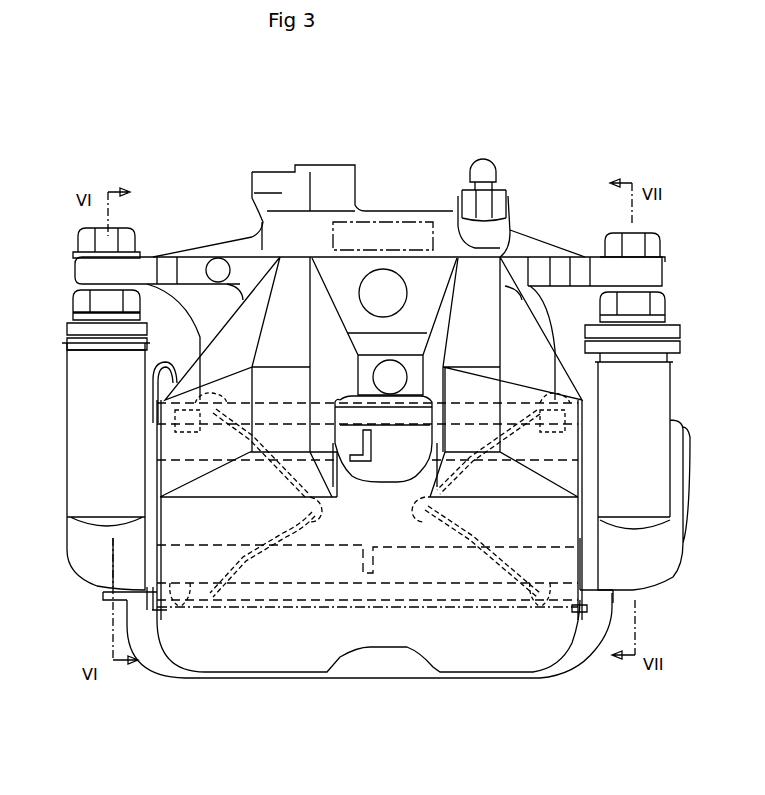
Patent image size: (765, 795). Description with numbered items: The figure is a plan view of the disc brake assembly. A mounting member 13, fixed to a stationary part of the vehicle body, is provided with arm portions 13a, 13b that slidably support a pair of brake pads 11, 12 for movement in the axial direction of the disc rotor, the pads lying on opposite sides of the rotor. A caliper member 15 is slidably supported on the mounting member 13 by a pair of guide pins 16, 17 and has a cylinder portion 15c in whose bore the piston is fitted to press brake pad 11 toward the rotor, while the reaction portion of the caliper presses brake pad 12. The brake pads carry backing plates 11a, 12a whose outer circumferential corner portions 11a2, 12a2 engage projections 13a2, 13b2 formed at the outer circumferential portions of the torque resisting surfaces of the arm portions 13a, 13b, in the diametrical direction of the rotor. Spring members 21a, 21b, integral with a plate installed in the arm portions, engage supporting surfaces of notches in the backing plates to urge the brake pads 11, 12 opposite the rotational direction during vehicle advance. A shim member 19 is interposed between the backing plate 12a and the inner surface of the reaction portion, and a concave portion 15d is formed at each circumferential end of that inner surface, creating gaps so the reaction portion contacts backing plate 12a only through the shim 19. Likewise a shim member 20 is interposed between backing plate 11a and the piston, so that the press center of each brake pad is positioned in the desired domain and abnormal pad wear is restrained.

The brake pad 11 is at (394, 455).
The backing plate 11a is at (453, 404).
The outer circumferential corner portion 11a2 is at (153, 423).
The brake pad 12 is at (327, 560).
The backing plate 12a is at (447, 600).
The outer circumferential corner portion 12a2 is at (143, 583).
The mounting member 13 is at (397, 673).
The arm portion 13a is at (655, 383).
The projection 13a2 is at (157, 415).
The arm portion 13b is at (130, 610).
The projection 13b2 is at (103, 595).
The caliper member 15 is at (396, 209).
The cylinder portion 15c is at (262, 230).
The concave portion 15d is at (180, 610).
The guide pin 16 is at (657, 303).
The guide pin 17 is at (68, 299).
The shim member 19 is at (272, 600).
The shim member 20 is at (267, 400).
The spring member 21a is at (155, 375).
The spring member 21b is at (153, 630).